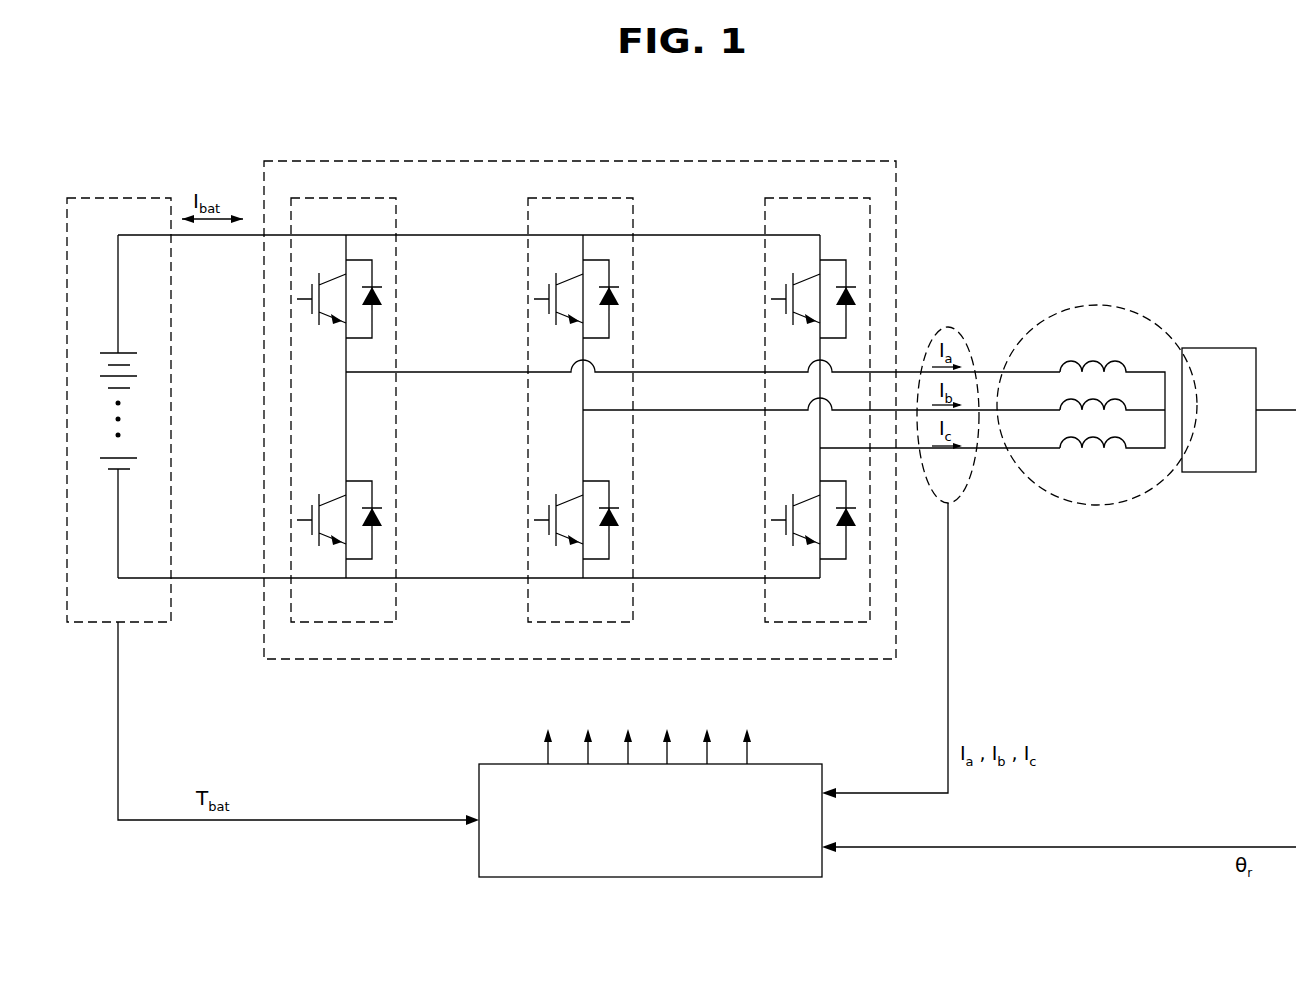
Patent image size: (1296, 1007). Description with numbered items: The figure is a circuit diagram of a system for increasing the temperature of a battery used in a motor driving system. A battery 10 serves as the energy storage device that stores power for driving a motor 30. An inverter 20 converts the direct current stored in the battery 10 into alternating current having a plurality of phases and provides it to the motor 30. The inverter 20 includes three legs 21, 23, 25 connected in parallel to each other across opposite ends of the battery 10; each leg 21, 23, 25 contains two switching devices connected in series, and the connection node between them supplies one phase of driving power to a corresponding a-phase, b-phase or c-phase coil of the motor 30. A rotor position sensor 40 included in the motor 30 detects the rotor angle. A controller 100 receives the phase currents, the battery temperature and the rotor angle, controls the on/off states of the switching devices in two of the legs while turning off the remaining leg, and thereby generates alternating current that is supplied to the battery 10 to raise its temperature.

The battery 10 is at (118, 198).
The inverter 20 is at (700, 161).
The leg 21 is at (343, 198).
The leg 23 is at (581, 198).
The leg 25 is at (818, 198).
The motor 30 is at (1088, 305).
The rotor position sensor 40 is at (1220, 348).
The controller 100 is at (651, 878).